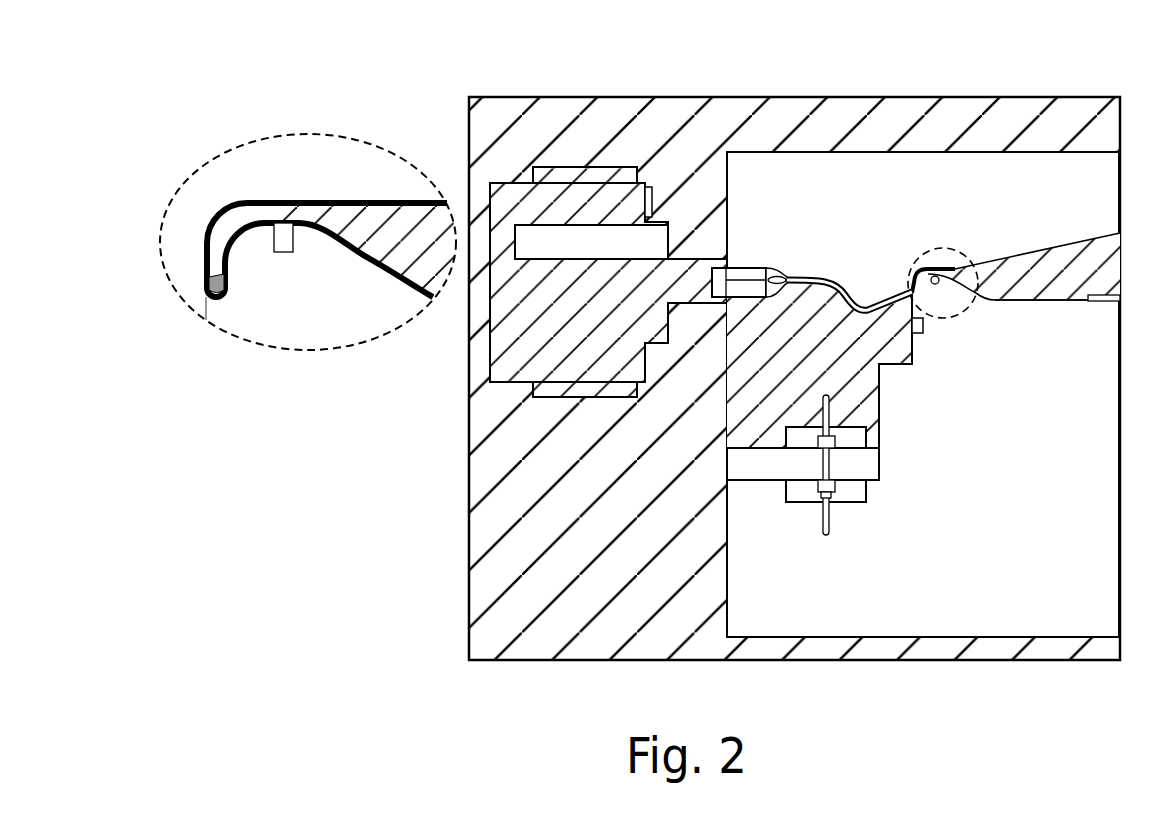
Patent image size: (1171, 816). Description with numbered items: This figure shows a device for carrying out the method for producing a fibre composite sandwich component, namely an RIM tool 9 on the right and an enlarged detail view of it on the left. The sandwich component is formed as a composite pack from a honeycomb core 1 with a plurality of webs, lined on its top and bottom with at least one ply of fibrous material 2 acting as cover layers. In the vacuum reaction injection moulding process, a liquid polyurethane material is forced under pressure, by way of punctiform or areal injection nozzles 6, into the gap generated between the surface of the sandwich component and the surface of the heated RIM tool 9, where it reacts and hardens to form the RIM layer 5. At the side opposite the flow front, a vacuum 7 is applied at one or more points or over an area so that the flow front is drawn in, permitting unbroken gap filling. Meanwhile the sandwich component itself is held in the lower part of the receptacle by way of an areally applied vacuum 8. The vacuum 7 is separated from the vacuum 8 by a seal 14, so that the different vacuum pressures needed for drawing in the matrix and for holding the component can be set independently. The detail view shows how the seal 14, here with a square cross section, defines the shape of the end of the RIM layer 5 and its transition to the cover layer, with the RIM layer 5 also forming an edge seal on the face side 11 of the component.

The honeycomb core 1 is at (923, 328).
The fibrous material 2 is at (1032, 285).
The RIM layer 5 is at (223, 213).
The injection nozzle 6 is at (856, 306).
The vacuum 7 is at (1066, 240).
The areally applied vacuum 8 is at (1066, 312).
The RIM tool 9 is at (688, 202).
The face side 11 is at (205, 281).
The seal 14 is at (283, 243).